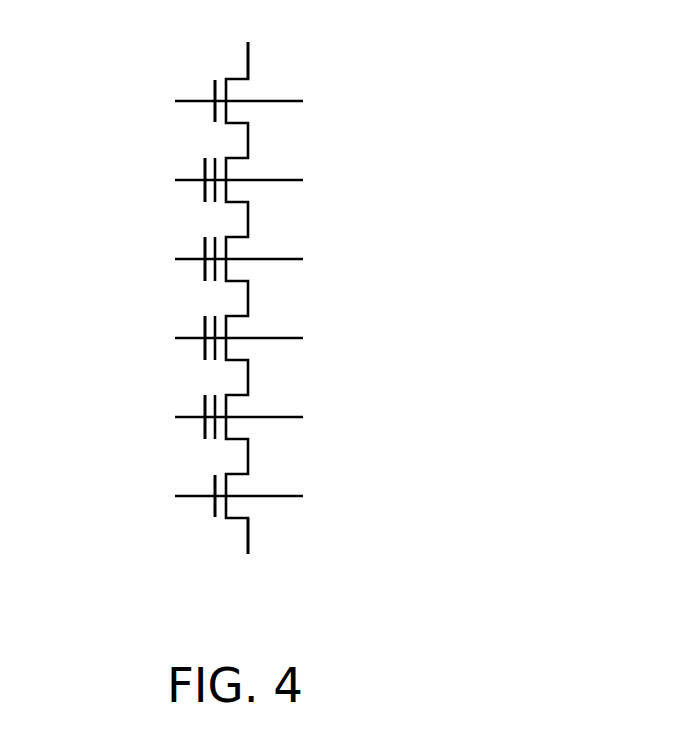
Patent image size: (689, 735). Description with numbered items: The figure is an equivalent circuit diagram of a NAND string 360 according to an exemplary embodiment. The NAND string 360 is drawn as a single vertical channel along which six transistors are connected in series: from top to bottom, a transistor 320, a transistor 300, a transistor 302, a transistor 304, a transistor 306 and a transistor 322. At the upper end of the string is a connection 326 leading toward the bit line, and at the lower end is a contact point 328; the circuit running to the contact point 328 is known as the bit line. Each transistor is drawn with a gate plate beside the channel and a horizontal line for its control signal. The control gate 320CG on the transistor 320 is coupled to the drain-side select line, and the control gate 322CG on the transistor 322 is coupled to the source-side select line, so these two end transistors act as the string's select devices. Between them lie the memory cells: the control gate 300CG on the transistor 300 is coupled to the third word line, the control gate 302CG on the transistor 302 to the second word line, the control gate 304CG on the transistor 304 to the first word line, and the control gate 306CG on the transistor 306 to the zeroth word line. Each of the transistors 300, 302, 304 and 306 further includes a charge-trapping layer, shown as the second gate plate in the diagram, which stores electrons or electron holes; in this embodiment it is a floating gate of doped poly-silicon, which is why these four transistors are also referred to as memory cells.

The bit line / drain-side connection 326 is at (248, 63).
The transistor 320 is at (247, 92).
The transistor 300 is at (247, 171).
The transistor 302 is at (247, 250).
The transistor 304 is at (247, 329).
The transistor 306 is at (247, 408).
The transistor 322 is at (247, 487).
The contact point 328 is at (249, 535).
The NAND string 360 is at (430, 605).
The control gate 320CG is at (212, 95).
The control gate 300CG is at (205, 174).
The control gate 302CG is at (205, 253).
The control gate 304CG is at (205, 332).
The control gate 306CG is at (205, 411).
The control gate 322CG is at (212, 490).